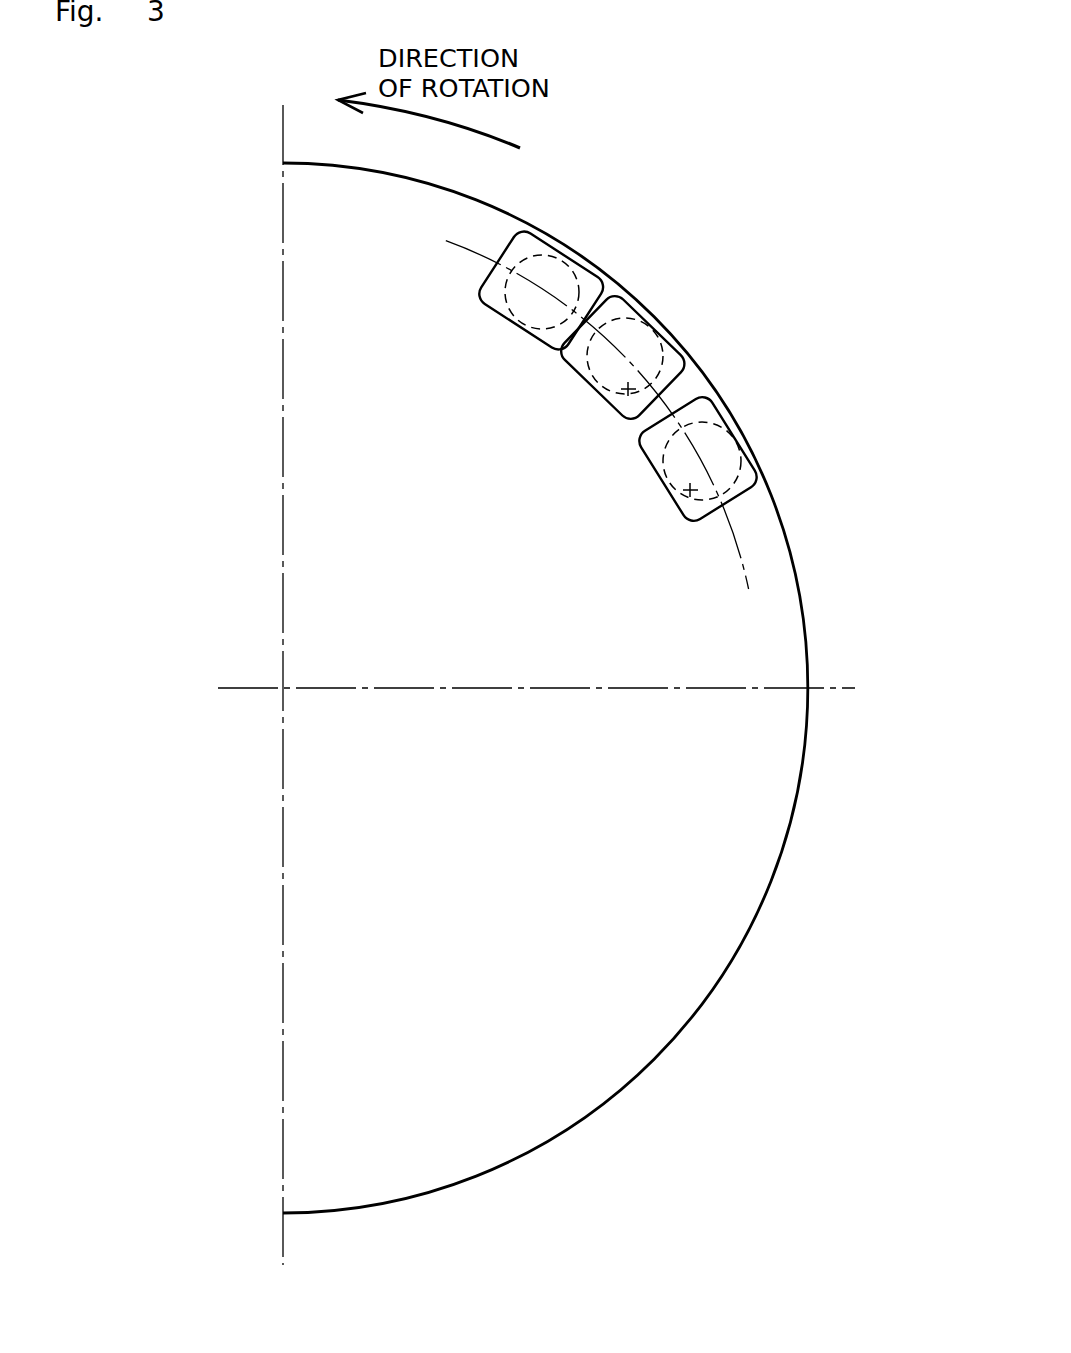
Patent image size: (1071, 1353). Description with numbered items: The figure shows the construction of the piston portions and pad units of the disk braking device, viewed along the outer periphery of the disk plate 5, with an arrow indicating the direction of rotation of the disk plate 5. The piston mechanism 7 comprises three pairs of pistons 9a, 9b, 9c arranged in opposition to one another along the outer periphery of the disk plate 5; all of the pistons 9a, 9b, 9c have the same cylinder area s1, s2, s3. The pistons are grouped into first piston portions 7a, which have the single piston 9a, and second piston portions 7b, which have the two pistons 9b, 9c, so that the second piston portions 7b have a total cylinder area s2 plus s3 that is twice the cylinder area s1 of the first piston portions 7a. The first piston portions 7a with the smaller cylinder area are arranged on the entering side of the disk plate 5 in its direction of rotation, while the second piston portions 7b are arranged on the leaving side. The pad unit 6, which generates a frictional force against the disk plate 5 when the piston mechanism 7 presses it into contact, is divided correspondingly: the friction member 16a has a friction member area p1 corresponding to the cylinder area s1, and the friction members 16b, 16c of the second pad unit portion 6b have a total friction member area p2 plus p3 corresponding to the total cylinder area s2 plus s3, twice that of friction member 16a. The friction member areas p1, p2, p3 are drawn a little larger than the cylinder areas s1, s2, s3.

The disk plate 5 is at (808, 797).
The pad unit 6 is at (472, 287).
The second pad unit portion 6b is at (497, 458).
The piston mechanism 7 is at (875, 273).
The first piston portions 7a is at (752, 451).
The second piston portions 7b is at (797, 245).
The piston 9a is at (712, 404).
The piston 9b is at (685, 357).
The piston 9c is at (600, 273).
The friction member 16a is at (689, 513).
The friction member 16b is at (575, 366).
The friction member 16c is at (535, 338).
The friction member area p1 is at (648, 452).
The friction member area p2 is at (587, 370).
The friction member area p3 is at (530, 237).
The cylinder area s1 is at (697, 473).
The cylinder area s2 is at (629, 390).
The cylinder area s3 is at (568, 266).